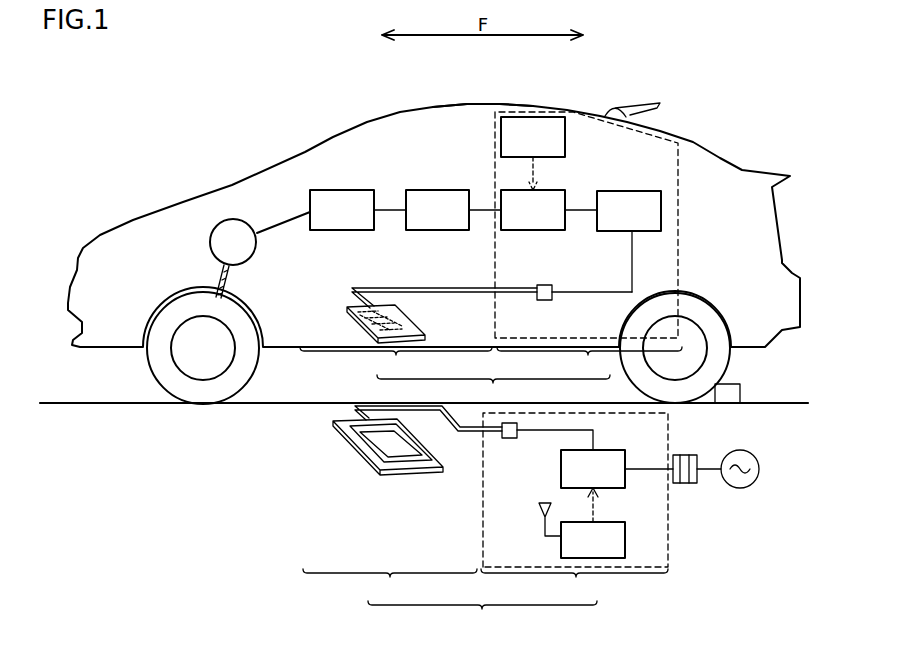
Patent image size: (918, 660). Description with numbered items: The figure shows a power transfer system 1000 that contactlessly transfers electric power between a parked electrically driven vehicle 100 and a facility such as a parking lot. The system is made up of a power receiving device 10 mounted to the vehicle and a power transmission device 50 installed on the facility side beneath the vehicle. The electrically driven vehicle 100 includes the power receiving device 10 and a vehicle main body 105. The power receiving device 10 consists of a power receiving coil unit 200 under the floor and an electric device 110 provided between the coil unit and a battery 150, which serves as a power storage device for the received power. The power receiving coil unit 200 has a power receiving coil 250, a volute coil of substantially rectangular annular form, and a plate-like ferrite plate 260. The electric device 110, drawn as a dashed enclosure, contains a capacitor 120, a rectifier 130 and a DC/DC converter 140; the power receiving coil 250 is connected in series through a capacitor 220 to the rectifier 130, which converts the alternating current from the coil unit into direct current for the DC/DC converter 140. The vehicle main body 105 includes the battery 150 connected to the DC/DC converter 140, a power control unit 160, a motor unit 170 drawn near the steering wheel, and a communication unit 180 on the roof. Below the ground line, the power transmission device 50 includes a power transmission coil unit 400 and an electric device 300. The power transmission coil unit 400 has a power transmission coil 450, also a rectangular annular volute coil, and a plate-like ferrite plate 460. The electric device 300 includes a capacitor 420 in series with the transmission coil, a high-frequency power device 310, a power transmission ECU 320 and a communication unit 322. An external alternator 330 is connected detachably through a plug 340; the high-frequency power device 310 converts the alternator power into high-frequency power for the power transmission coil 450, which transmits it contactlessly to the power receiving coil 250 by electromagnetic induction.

The power transfer system 1000 is at (148, 72).
The power receiving device 10 is at (424, 389).
The power transmission device 50 is at (482, 617).
The electrically driven vehicle 100 is at (267, 143).
The vehicle main body 105 is at (471, 105).
The electric device 110 is at (588, 246).
The capacitor 120 is at (568, 136).
The rectifier 130 is at (641, 191).
The DC/DC converter 140 is at (540, 190).
The battery 150 is at (445, 190).
The power control unit 160 is at (350, 190).
The motor unit 170 is at (238, 222).
The communication unit 180 is at (645, 103).
The power receiving coil unit 200 is at (396, 363).
The capacitor 220 is at (545, 285).
The power receiving coil 250 is at (348, 302).
The ferrite plate 260 is at (358, 332).
The electric device 300 is at (574, 508).
The high-frequency power device 310 is at (612, 450).
The power transmission ECU 320 is at (612, 522).
The communication unit 322 is at (540, 507).
The external alternator 330 is at (752, 455).
The plug 340 is at (688, 484).
The power transmission coil unit 400 is at (390, 586).
The capacitor 420 is at (509, 440).
The power transmission coil 450 is at (405, 470).
The ferrite plate 460 is at (340, 445).